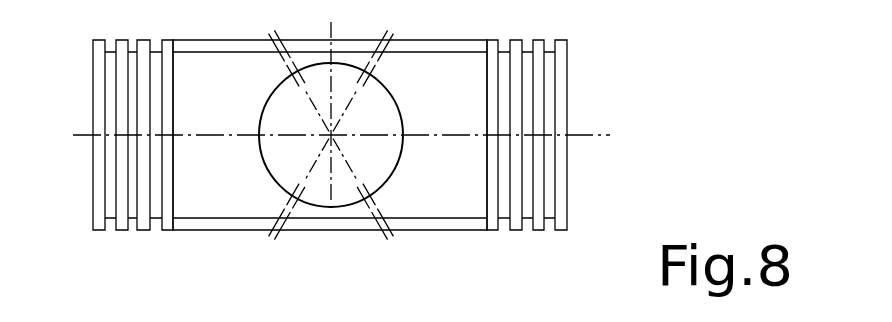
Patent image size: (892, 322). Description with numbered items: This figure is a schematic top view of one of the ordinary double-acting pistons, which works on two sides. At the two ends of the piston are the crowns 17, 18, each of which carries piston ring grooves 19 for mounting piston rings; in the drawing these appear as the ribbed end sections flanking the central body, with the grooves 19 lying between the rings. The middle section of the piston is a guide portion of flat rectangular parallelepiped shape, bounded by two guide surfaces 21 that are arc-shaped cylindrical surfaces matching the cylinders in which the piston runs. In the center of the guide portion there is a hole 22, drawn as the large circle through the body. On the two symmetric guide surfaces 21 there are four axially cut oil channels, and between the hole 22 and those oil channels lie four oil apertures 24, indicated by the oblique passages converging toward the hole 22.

The crown 17 is at (100, 70).
The crown 18 is at (567, 85).
The piston ring grooves 19 is at (132, 227).
The guide surfaces 21 is at (440, 223).
The hole 22 is at (318, 205).
The oil apertures 24 is at (268, 230).